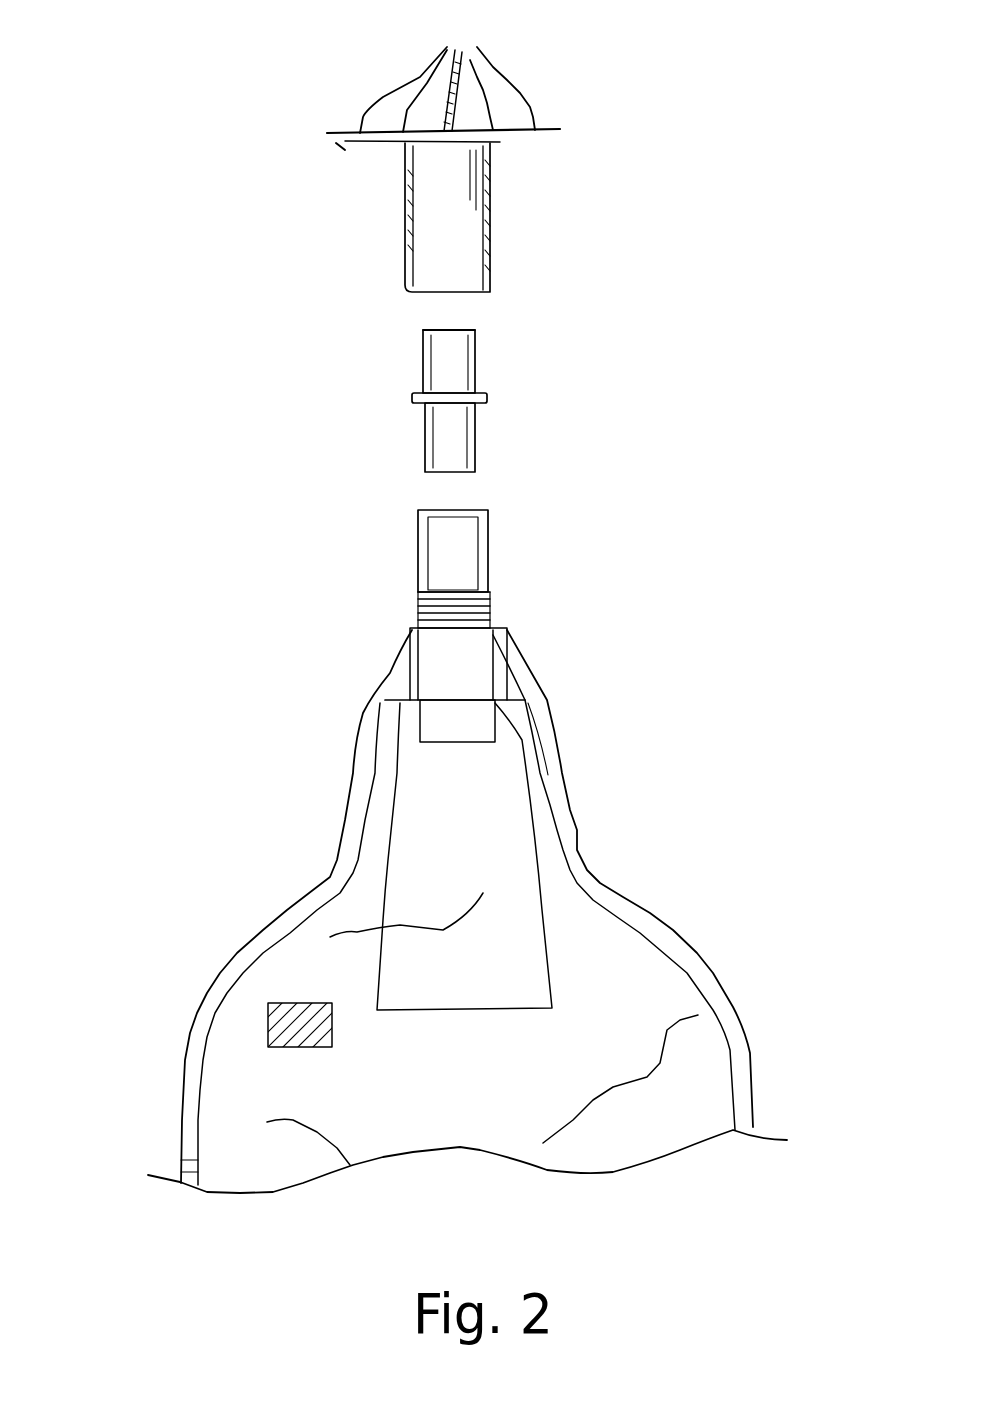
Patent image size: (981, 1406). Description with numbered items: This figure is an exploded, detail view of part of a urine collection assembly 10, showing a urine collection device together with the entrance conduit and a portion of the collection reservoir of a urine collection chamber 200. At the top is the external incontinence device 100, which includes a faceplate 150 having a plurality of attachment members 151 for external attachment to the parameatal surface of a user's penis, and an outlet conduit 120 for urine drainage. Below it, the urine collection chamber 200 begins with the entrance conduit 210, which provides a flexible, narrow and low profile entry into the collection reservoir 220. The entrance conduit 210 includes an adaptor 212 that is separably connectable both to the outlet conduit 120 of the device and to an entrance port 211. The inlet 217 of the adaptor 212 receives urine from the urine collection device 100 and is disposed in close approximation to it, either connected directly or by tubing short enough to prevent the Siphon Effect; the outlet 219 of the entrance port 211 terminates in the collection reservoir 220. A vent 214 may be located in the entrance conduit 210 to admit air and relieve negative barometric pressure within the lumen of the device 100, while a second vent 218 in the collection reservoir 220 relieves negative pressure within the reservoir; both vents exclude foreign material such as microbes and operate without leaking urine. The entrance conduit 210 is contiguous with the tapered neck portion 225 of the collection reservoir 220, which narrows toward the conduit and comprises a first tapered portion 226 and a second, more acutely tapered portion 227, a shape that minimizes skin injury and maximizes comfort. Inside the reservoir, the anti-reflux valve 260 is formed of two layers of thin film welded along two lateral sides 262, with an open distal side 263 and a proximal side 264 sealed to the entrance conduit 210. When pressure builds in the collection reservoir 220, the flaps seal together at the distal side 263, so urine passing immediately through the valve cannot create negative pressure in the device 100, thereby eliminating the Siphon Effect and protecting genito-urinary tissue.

The urine collection assembly 10 is at (790, 303).
The external incontinence device 100 is at (593, 123).
The outlet conduit 120 is at (418, 300).
The faceplate 150 is at (348, 152).
The attachment members 151 is at (447, 70).
The urine collection chamber 200 is at (638, 502).
The entrance conduit 210 is at (298, 318).
The entrance port 211 is at (490, 555).
The adaptor 212 is at (477, 437).
The vent 214 is at (420, 618).
The inlet 217 is at (430, 330).
The vent 218 is at (268, 1023).
The outlet 219 is at (457, 743).
The collection reservoir 220 is at (233, 1090).
The tapered neck portion 225 is at (316, 838).
The first tapered portion 226 is at (420, 850).
The second tapered portion 227 is at (523, 675).
The anti-reflux valve 260 is at (490, 1012).
The lateral sides 262 is at (557, 957).
The distal side 263 is at (400, 1015).
The proximal side 264 is at (467, 708).